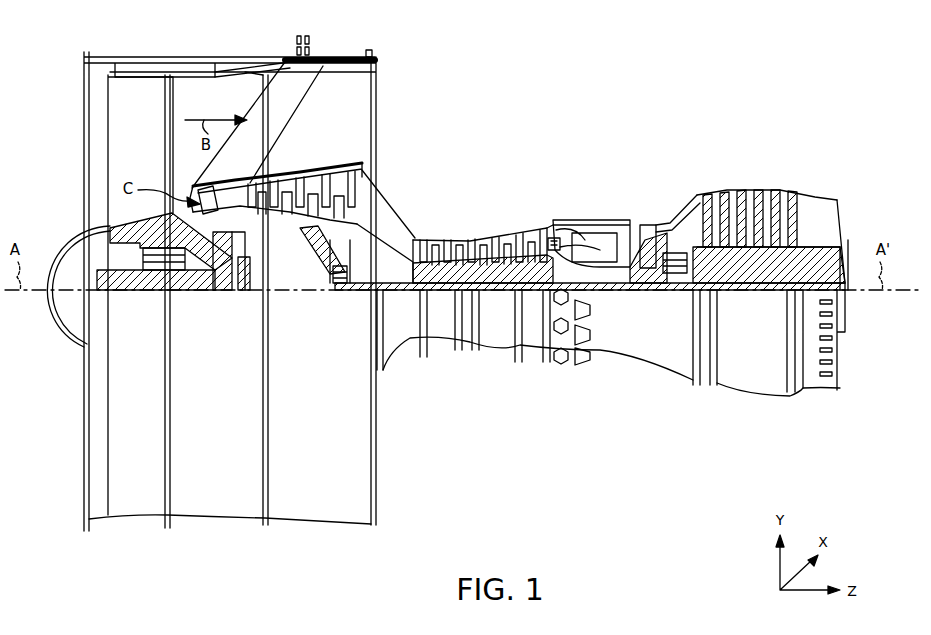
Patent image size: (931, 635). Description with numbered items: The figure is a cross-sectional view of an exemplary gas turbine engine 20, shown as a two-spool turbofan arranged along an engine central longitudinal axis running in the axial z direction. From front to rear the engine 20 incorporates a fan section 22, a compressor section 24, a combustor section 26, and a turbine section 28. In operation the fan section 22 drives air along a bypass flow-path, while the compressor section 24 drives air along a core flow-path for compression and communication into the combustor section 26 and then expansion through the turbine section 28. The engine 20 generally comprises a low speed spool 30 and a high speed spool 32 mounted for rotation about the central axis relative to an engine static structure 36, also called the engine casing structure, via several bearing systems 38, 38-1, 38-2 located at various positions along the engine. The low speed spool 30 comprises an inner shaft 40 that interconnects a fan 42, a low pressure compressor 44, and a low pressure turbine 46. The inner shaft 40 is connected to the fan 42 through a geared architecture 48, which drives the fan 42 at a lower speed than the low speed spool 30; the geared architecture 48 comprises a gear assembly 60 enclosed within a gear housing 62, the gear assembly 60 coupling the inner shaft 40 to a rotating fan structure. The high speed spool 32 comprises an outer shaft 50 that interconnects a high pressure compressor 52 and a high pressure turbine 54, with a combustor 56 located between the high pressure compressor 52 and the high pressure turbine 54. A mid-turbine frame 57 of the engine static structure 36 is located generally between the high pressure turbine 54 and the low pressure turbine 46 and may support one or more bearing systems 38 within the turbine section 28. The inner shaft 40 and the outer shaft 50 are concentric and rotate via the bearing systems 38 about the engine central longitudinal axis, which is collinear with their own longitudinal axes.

The gas turbine engine 20 is at (625, 88).
The fan section 22 is at (262, 46).
The compressor section 24 is at (275, 140).
The combustor section 26 is at (545, 133).
The turbine section 28 is at (795, 140).
The low speed spool 30 is at (505, 292).
The high speed spool 32 is at (552, 240).
The engine static structure 36 is at (652, 350).
The bearing system 38 is at (680, 276).
The bearing system 38-1 is at (150, 272).
The bearing system 38-2 is at (340, 284).
The inner shaft 40 is at (390, 296).
The fan 42 is at (145, 150).
The low pressure compressor 44 is at (330, 197).
The low pressure turbine 46 is at (740, 204).
The geared architecture 48 is at (238, 296).
The outer shaft 50 is at (582, 272).
The high pressure compressor 52 is at (466, 237).
The high pressure turbine 54 is at (648, 228).
The combustor 56 is at (587, 236).
The mid-turbine frame 57 is at (673, 224).
The gear assembly 60 is at (245, 278).
The gear housing 62 is at (240, 248).